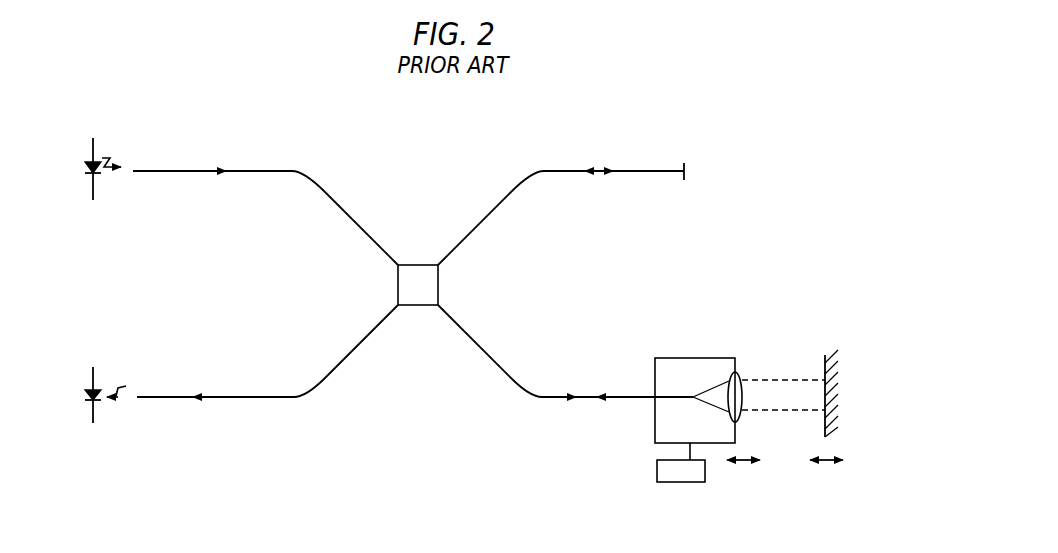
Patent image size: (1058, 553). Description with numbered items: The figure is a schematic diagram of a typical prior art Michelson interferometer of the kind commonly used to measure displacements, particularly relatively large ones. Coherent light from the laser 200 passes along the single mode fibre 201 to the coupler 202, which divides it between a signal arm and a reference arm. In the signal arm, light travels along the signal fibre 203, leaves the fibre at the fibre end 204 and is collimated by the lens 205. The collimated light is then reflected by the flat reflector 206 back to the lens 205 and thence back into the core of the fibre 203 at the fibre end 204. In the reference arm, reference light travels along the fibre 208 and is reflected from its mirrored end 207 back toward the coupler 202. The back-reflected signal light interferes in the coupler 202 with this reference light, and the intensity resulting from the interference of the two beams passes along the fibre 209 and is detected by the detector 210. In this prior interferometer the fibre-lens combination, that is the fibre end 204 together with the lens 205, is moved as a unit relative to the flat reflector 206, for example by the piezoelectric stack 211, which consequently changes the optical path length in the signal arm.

The laser 200 is at (97, 145).
The single mode fibre 201 is at (285, 169).
The coupler 202 is at (422, 278).
The signal fibre 203 is at (545, 400).
The fibre end 204 is at (690, 392).
The lens 205 is at (738, 374).
The flat reflector 206 is at (840, 418).
The mirrored end 207 is at (689, 172).
The fibre 208 is at (570, 168).
The fibre 209 is at (260, 400).
The detector 210 is at (97, 373).
The piezoelectric stack 211 is at (683, 473).